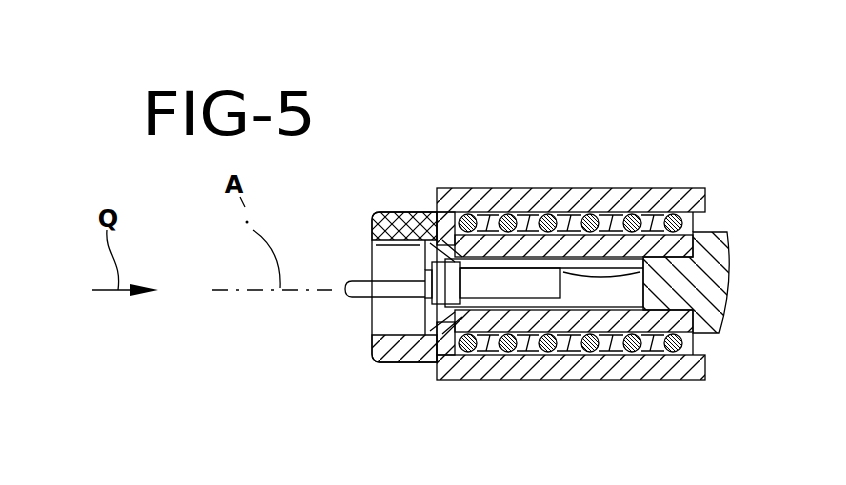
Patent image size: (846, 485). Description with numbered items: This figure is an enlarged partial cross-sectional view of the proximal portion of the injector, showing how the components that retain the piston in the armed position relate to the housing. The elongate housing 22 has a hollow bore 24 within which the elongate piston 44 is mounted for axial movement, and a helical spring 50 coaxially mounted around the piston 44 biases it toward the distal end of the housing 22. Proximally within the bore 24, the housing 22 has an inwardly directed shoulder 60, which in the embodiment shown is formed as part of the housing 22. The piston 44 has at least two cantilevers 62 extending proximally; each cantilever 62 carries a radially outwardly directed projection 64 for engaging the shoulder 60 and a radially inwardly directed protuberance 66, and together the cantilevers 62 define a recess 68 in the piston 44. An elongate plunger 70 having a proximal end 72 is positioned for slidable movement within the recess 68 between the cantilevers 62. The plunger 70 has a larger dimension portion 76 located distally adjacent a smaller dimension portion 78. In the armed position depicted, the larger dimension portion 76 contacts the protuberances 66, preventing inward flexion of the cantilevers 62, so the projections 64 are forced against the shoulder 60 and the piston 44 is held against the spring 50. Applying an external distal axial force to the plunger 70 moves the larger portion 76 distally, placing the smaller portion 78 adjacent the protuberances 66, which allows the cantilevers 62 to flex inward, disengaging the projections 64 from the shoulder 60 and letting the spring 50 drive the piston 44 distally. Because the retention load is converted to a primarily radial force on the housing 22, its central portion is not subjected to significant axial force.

The housing 22 is at (588, 188).
The hollow bore 24 is at (657, 188).
The piston 44 is at (698, 288).
The helical spring 50 is at (703, 343).
The shoulder 60 is at (434, 212).
The cantilever 62 is at (437, 362).
The projection 64 is at (428, 240).
The protuberance 66 is at (373, 212).
The recess 68 is at (592, 298).
The plunger 70 is at (697, 234).
The proximal end 72 is at (352, 298).
The larger dimension portion 76 is at (470, 312).
The smaller dimension portion 78 is at (370, 276).